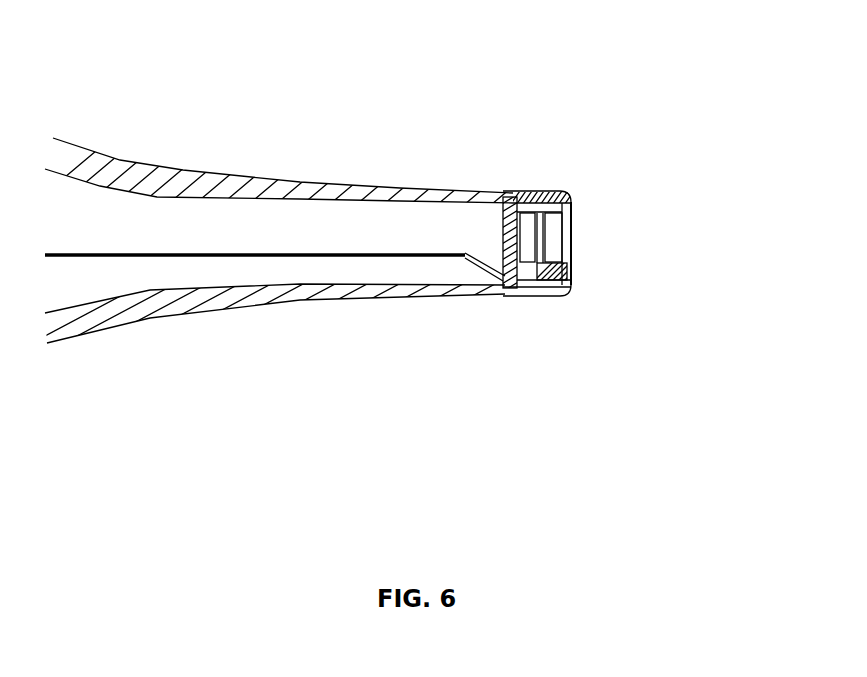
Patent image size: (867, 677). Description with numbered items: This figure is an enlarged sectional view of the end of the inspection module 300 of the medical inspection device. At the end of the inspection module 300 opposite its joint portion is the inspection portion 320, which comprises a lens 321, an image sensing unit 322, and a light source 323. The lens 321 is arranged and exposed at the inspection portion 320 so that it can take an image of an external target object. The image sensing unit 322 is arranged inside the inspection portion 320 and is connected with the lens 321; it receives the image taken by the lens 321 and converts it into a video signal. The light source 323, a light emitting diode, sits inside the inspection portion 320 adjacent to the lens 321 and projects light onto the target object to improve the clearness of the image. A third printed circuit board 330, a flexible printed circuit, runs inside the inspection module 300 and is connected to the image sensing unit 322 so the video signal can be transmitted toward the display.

The inspection module 300 is at (177, 181).
The inspection portion 320 is at (573, 193).
The lens 321 is at (573, 235).
The image sensing unit 322 is at (503, 260).
The light source 323 is at (557, 290).
The third printed circuit board 330 is at (285, 256).